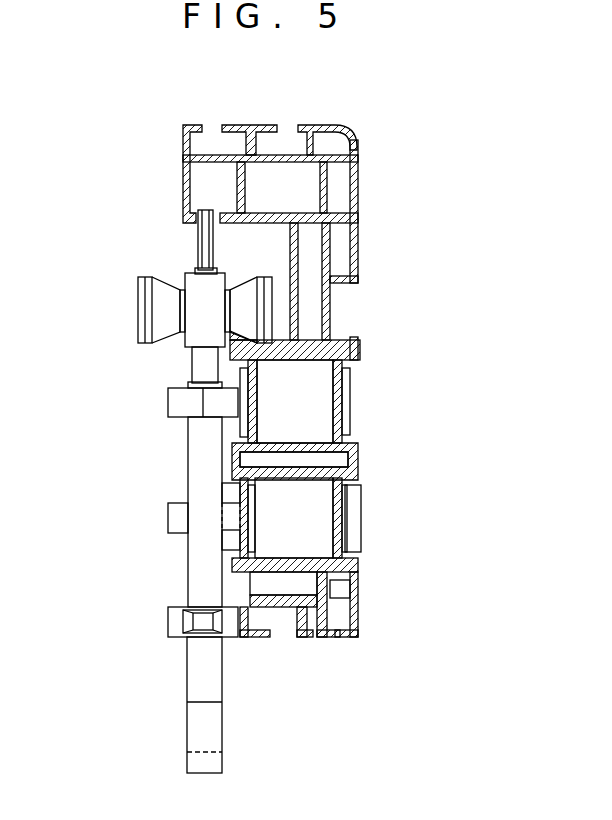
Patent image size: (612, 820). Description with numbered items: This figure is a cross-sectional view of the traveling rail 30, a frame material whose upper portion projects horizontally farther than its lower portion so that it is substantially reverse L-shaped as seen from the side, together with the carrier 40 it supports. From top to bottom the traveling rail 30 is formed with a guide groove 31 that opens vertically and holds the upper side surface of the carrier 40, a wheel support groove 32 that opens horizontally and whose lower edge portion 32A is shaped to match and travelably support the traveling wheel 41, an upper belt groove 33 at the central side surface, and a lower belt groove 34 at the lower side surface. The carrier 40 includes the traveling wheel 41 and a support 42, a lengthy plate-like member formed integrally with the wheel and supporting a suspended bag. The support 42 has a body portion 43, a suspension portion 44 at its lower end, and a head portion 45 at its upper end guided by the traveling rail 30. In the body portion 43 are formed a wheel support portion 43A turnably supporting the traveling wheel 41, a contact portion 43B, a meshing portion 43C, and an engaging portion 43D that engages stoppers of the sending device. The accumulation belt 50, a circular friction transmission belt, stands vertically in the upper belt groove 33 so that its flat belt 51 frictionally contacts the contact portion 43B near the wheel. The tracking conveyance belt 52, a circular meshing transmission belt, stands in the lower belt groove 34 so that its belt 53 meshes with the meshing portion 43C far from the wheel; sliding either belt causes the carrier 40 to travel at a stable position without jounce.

The traveling rail 30 is at (310, 364).
The guide groove 31 is at (212, 213).
The wheel support groove 32 is at (294, 268).
The lower edge portion 32A is at (292, 325).
The upper belt groove 33 is at (270, 461).
The lower belt groove 34 is at (290, 585).
The carrier 40 is at (233, 679).
The traveling wheel 41 is at (143, 307).
The support 42 is at (167, 445).
The body portion 43 is at (188, 468).
The wheel support portion 43A is at (190, 339).
The contact portion 43B is at (170, 405).
The meshing portion 43C is at (172, 515).
The engaging portion 43D is at (196, 370).
The suspension portion 44 is at (188, 679).
The head portion 45 is at (198, 251).
The accumulation belt 50 is at (356, 402).
The belt 51 is at (245, 421).
The tracking conveyance belt 52 is at (346, 517).
The belt 53 is at (292, 547).